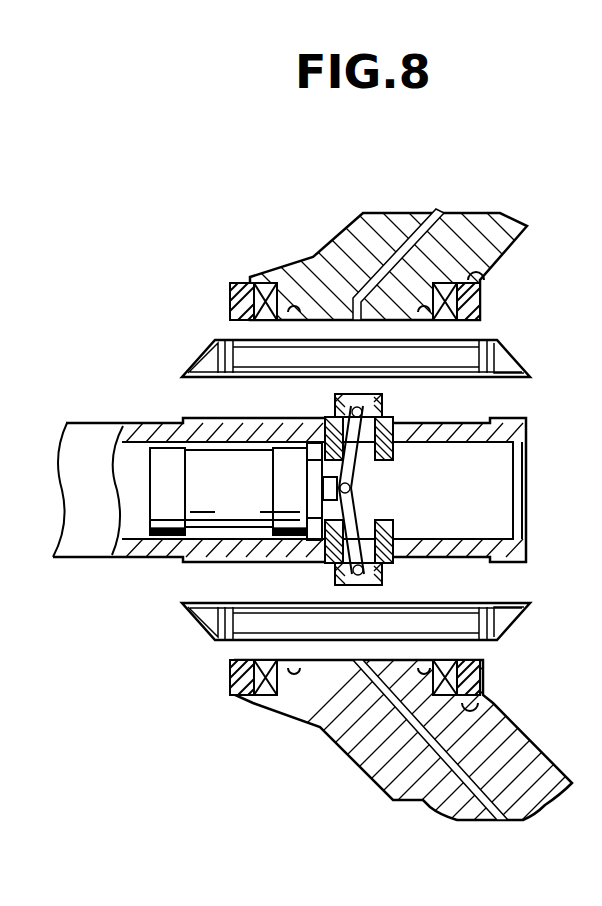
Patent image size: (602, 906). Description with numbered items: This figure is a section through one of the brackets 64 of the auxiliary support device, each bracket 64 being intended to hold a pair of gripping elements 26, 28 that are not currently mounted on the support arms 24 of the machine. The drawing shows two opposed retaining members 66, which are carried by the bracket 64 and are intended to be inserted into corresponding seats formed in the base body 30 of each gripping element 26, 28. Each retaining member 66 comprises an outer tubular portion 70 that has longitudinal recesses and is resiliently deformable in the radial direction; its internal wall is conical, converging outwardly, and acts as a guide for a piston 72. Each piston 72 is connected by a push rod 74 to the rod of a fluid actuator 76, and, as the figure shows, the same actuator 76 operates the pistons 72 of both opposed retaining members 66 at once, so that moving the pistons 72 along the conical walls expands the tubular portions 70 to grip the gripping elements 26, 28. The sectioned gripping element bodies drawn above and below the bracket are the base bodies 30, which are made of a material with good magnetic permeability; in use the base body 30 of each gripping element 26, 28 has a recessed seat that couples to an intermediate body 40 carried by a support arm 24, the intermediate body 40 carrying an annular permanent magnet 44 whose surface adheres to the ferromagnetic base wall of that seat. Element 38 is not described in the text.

The support arm 24 is at (477, 225).
The gripping element 26 is at (527, 372).
The gripping element 28 is at (522, 630).
The base body 30 is at (376, 501).
The groove 38 is at (420, 233).
The intermediate body 40 is at (482, 268).
The annular permanent magnet 44 is at (468, 318).
The bracket 64 is at (158, 415).
The retaining member 66 is at (395, 412).
The outer tubular portion 70 is at (369, 469).
The piston 72 is at (352, 396).
The push rod 74 is at (362, 524).
The fluid actuator 76 is at (233, 515).